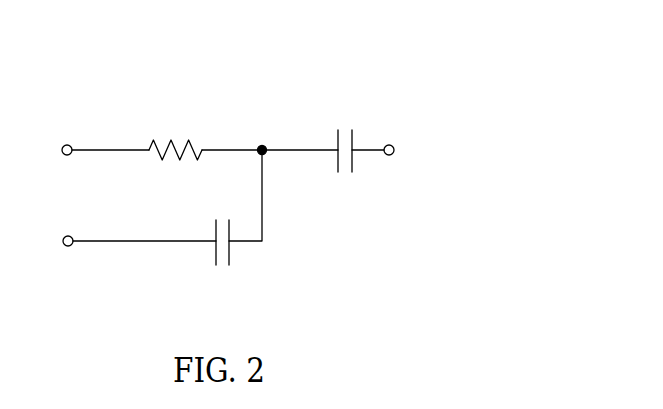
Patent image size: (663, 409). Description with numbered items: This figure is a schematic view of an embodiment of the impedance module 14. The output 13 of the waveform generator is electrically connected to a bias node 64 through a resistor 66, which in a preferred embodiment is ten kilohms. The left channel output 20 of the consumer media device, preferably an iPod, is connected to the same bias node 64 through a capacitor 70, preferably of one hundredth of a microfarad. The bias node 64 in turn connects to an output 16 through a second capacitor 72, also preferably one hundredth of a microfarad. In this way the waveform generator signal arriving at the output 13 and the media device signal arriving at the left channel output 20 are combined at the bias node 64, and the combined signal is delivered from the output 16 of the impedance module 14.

The output of the waveform generator 13 is at (69, 145).
The impedance module 14 is at (512, 54).
The output 16 is at (387, 145).
The left channel output 20 is at (65, 246).
The bias node 64 is at (262, 146).
The resistor 66 is at (173, 143).
The capacitor 70 is at (229, 250).
The capacitor 72 is at (336, 168).